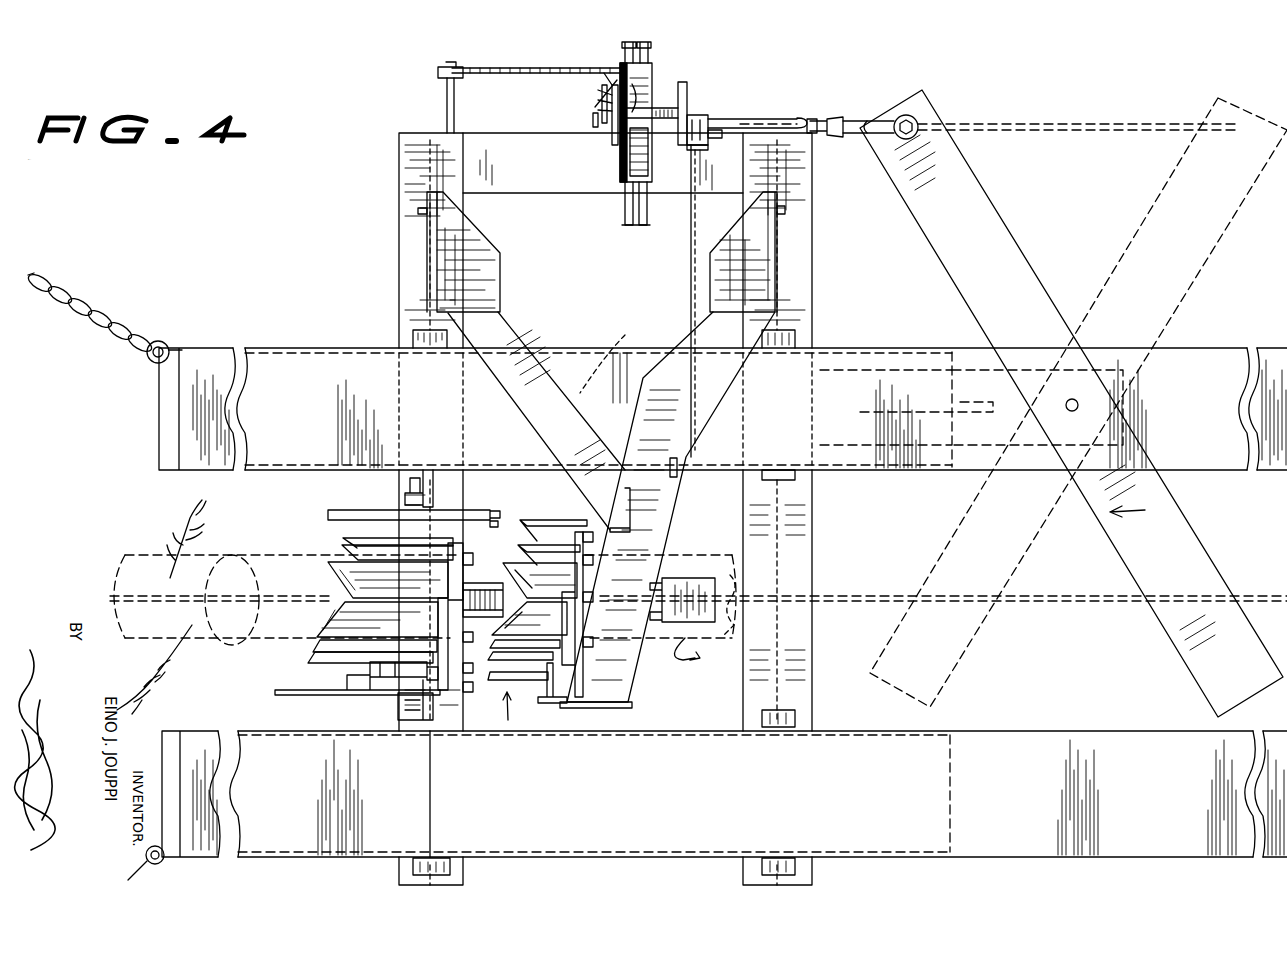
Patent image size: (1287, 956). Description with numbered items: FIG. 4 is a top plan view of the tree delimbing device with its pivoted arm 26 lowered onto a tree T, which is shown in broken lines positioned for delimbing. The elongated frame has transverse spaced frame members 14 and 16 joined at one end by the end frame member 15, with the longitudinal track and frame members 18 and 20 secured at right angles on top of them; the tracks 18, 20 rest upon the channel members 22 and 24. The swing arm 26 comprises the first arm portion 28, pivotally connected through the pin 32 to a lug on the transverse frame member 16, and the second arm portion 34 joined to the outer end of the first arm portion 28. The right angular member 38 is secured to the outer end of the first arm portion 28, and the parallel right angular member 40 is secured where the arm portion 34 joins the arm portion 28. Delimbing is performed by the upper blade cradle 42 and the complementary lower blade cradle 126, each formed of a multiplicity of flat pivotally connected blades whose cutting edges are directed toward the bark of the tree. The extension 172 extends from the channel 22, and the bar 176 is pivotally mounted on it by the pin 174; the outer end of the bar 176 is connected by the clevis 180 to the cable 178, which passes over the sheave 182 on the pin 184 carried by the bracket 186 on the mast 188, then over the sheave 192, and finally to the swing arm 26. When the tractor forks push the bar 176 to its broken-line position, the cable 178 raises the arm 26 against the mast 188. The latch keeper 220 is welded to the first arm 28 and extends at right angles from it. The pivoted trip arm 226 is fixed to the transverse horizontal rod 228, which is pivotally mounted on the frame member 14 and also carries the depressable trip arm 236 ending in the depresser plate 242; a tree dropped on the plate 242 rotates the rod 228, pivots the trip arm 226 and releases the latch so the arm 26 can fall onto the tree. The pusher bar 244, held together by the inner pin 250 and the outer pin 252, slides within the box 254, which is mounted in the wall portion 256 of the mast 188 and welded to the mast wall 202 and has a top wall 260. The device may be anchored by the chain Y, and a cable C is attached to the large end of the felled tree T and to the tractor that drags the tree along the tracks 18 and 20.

The transverse frame member 14 is at (399, 253).
The end frame member 15 is at (514, 187).
The transverse frame member 16 is at (812, 245).
The longitudinal track and frame member 18 is at (302, 348).
The longitudinal track and frame member 20 is at (259, 730).
The channel member 22 is at (927, 478).
The channel member 24 is at (910, 732).
The pivoted arm 26 is at (550, 332).
The first arm portion 28 is at (648, 542).
The pin 32 is at (786, 210).
The second arm portion 34 is at (602, 353).
The right angular member 38 is at (562, 710).
The right angular member 40 is at (658, 496).
The upper blade cradle 42 is at (500, 725).
The lower blade cradle 126 is at (305, 672).
The extension 172 is at (954, 352).
The pin 174 is at (1074, 399).
The bar 176 is at (1244, 110).
The cable 178 is at (1044, 128).
The clevis 180 is at (897, 118).
The sheave 182 is at (730, 126).
The pin 184 is at (708, 118).
The bracket 186 is at (720, 120).
The mast 188 is at (688, 150).
The sheave 192 is at (690, 110).
The wall portion 202 is at (620, 136).
The latch keeper 220 is at (633, 516).
The pivoted trip arm 226 is at (448, 68).
The transverse horizontal rod 228 is at (445, 108).
The depressable trip arm 236 is at (482, 580).
The depresser plate 242 is at (715, 578).
The pusher bar 244 is at (625, 211).
The inner pin 250 is at (636, 228).
The outer pin 252 is at (623, 38).
The box 254 is at (630, 158).
The wall portion 256 is at (610, 96).
The top wall 260 is at (600, 78).
The tree T is at (132, 551).
The chain Y is at (104, 304).
The cable C is at (1084, 602).